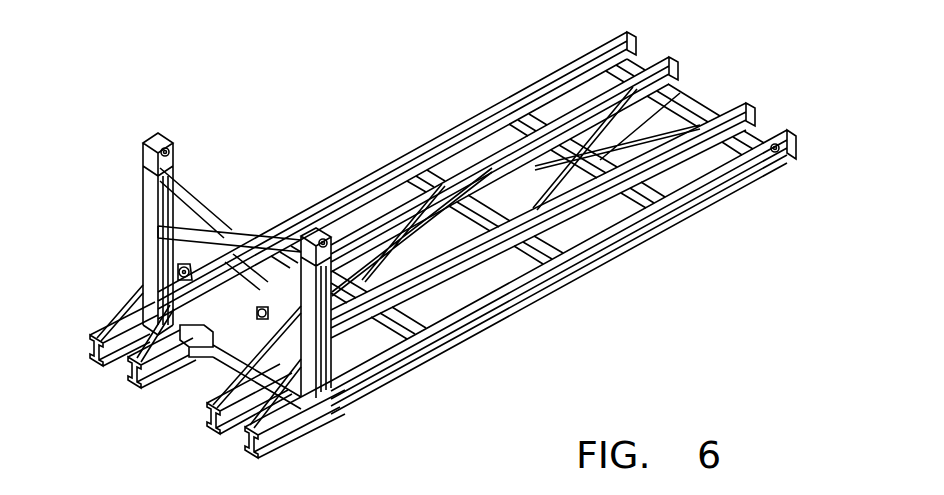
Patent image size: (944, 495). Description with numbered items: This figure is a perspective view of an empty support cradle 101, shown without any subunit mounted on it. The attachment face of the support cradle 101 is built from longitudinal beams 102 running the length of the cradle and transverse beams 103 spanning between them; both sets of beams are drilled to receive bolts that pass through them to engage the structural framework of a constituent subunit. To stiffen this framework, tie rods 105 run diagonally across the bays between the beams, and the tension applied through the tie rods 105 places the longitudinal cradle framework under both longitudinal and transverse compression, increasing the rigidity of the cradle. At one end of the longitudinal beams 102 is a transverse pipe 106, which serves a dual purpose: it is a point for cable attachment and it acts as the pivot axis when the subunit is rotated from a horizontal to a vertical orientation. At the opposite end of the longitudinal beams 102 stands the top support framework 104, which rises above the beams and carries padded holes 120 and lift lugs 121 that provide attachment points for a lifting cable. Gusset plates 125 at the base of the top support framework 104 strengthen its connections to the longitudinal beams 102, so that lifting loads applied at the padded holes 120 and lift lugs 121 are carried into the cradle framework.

The support cradle 101 is at (440, 122).
The longitudinal beams 102 is at (585, 56).
The transverse beams 103 is at (772, 122).
The top support framework 104 is at (143, 210).
The tie rods 105 is at (648, 122).
The transverse pipe 106 is at (778, 152).
The padded holes 120 is at (170, 153).
The lift lugs 121 is at (183, 277).
The gusset plates 125 is at (112, 318).